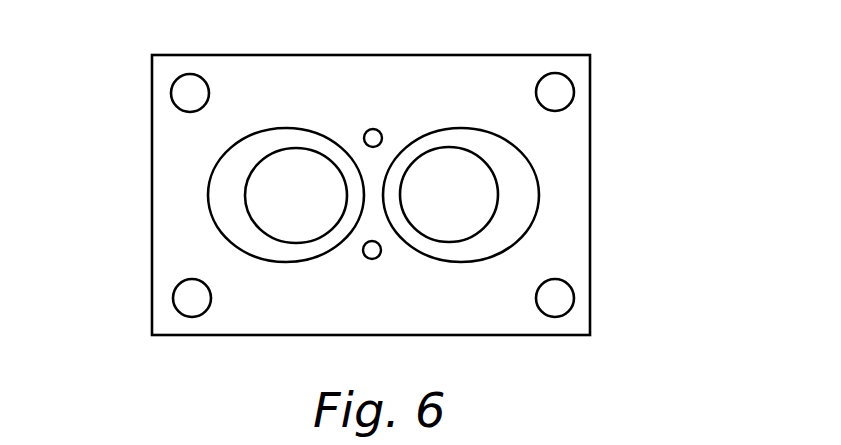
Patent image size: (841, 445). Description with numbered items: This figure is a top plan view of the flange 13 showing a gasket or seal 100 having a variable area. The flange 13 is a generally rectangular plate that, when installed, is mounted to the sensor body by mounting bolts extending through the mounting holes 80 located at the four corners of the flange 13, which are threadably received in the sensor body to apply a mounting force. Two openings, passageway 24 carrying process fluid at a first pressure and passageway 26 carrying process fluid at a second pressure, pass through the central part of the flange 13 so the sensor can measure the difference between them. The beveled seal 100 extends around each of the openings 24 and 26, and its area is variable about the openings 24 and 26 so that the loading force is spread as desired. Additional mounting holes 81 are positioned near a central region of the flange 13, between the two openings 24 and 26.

The flange 13 is at (590, 193).
The passageway 24 is at (273, 198).
The passageway 26 is at (458, 200).
The mounting holes 80 is at (172, 90).
The additional mounting holes 81 is at (373, 129).
The seal 100 is at (211, 186).